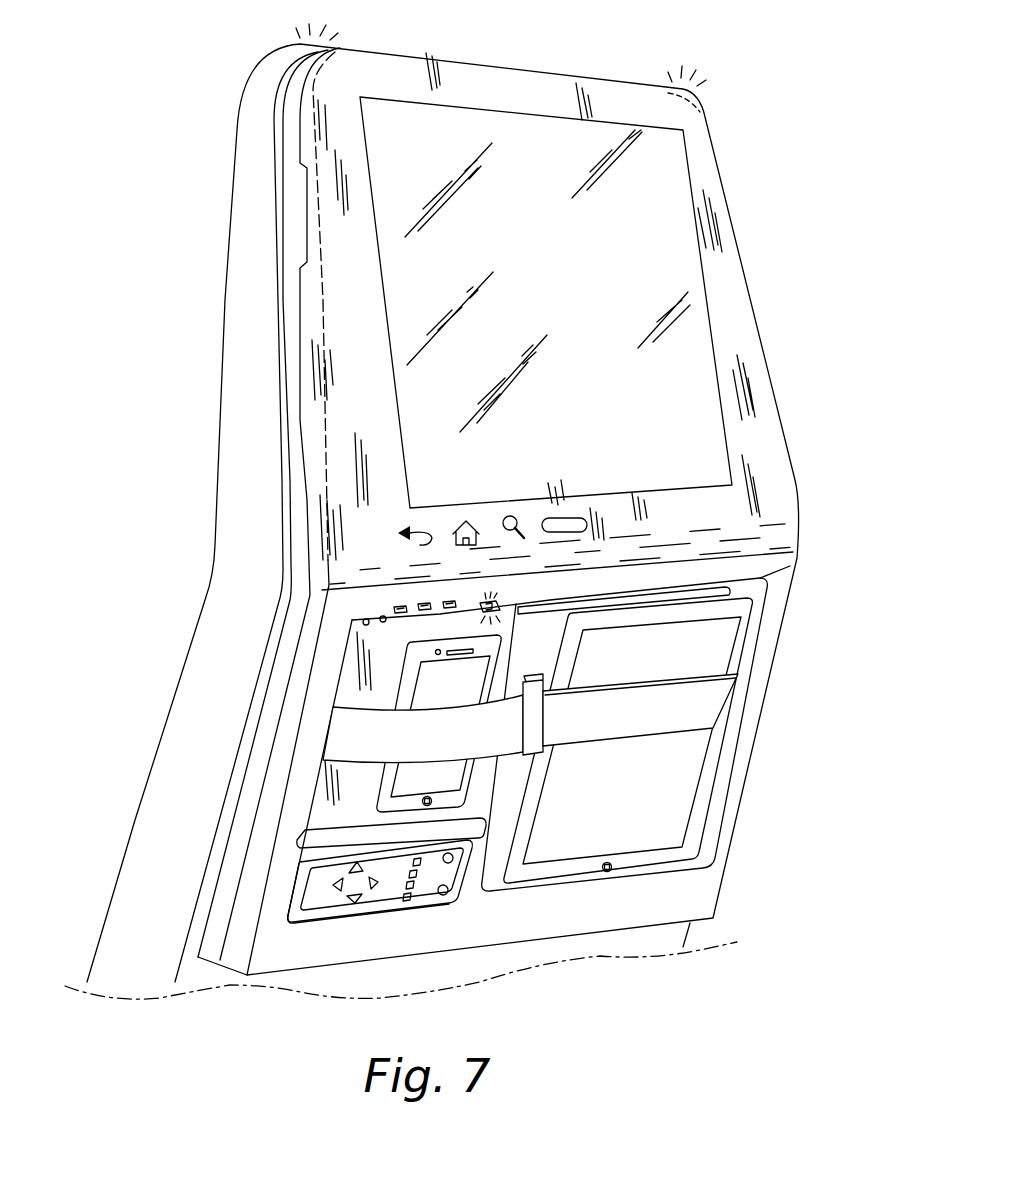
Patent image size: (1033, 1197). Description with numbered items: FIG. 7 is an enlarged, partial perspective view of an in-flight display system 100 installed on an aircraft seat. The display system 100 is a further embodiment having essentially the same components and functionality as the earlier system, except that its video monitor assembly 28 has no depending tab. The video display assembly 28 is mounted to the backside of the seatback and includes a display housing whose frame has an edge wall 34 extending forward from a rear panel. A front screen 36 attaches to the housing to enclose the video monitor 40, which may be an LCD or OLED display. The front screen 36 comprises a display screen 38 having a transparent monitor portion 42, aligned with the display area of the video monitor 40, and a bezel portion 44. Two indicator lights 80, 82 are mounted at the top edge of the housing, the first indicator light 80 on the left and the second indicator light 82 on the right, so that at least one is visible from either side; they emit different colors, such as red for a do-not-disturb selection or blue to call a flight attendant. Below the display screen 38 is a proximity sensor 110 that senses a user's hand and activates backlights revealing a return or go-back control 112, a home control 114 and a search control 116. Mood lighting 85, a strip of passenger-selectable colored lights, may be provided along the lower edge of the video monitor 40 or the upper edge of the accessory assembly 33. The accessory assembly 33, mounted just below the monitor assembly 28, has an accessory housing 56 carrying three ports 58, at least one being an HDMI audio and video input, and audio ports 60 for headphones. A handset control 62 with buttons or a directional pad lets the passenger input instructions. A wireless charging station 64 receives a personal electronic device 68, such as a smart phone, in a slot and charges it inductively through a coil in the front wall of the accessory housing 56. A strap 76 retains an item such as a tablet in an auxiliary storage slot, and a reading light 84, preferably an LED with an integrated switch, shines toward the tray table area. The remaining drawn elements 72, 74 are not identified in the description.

The in-flight display system 100 is at (205, 102).
The first indicator light 80 is at (325, 46).
The second indicator light 82 is at (702, 113).
The monitor portion 42 is at (397, 197).
The bezel portion 44 is at (355, 300).
The edge wall 34 is at (312, 372).
The video display assembly 28 is at (646, 207).
The front screen 36 is at (738, 273).
The display screen 38 is at (714, 318).
The video monitor 40 is at (597, 323).
The search control 116 is at (517, 516).
The home control 114 is at (464, 519).
The proximity sensor 110 is at (582, 517).
The return or go-back control 112 is at (408, 530).
The ports 58 is at (400, 609).
The audio ports 60 is at (366, 621).
The mood lighting 85 is at (697, 593).
The accessory assembly 33 is at (340, 670).
The reading light 84 is at (515, 628).
The accessory housing 56 is at (318, 688).
The smartphone 72 is at (347, 742).
The strap 76 is at (710, 710).
The wireless charging station 64 is at (322, 780).
The personal electronic device 68 is at (375, 805).
The tablet 74 is at (682, 780).
The handset control 62 is at (318, 884).